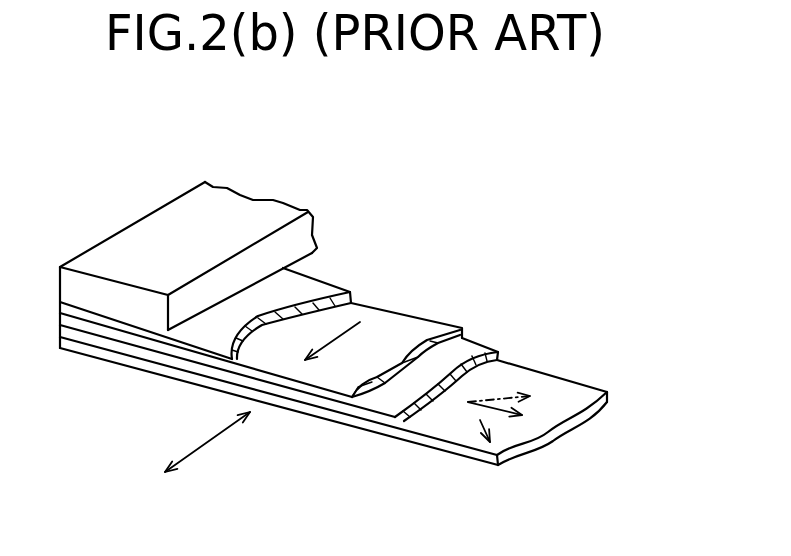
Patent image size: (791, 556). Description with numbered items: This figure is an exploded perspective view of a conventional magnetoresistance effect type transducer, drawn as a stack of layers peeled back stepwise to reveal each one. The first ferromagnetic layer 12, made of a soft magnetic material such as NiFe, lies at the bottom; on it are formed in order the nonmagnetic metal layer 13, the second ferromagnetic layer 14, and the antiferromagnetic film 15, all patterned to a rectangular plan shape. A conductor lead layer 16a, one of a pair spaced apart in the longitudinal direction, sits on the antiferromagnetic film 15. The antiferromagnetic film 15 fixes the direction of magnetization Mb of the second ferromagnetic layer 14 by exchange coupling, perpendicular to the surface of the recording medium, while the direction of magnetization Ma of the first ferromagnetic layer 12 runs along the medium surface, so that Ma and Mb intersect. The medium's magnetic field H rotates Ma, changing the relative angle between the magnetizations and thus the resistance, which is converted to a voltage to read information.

The first ferromagnetic layer 12 is at (547, 388).
The nonmagnetic metal layer 13 is at (467, 353).
The second ferromagnetic layer 14 is at (398, 330).
The antiferromagnetic film 15 is at (308, 287).
The conductor lead layer 16a is at (168, 220).
The direction of magnetization of the first ferromagnetic layer Ma is at (495, 408).
The direction of magnetization of the second ferromagnetic layer Mb is at (328, 345).
The magnetic field H is at (213, 437).